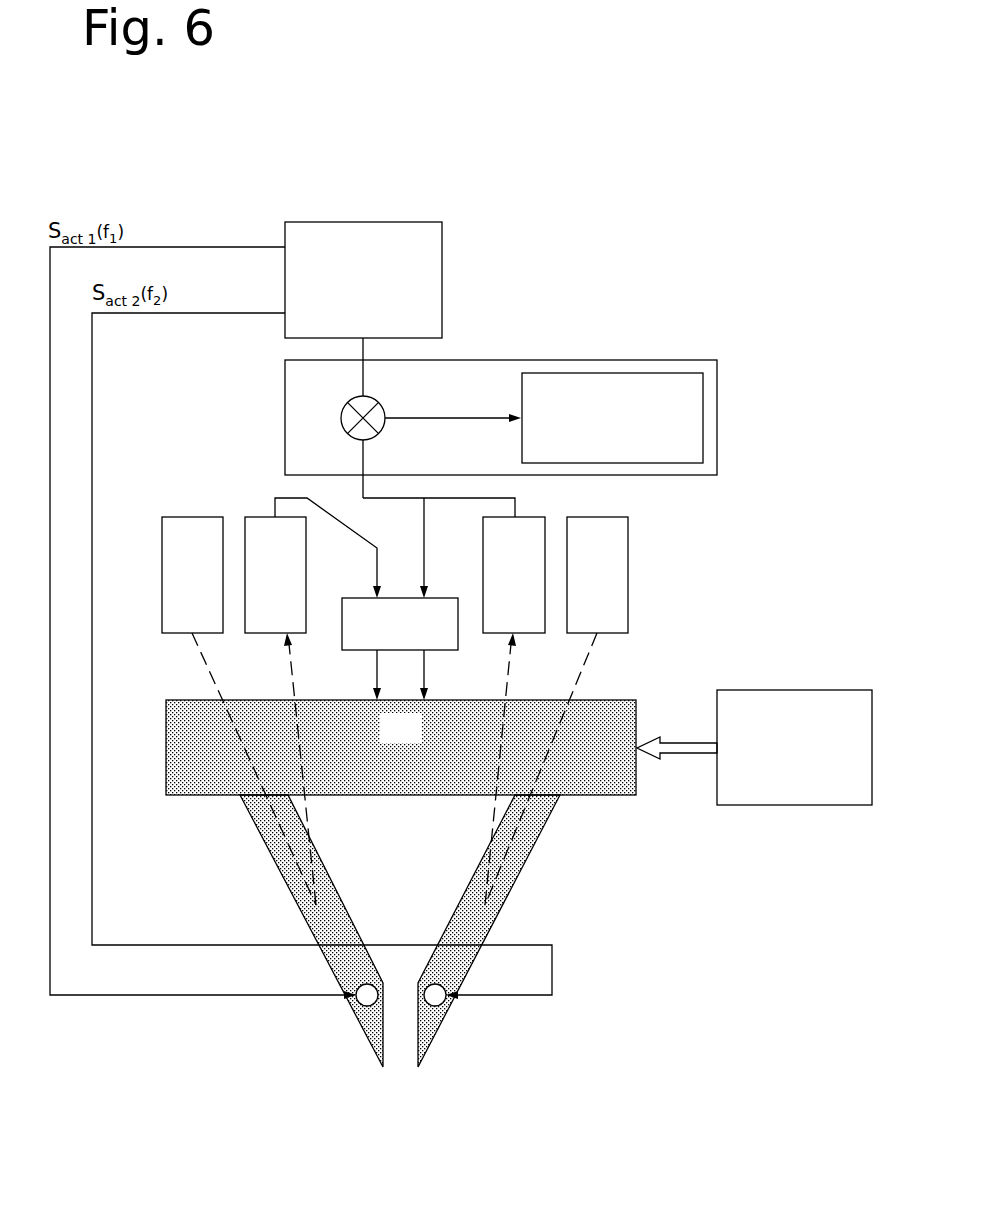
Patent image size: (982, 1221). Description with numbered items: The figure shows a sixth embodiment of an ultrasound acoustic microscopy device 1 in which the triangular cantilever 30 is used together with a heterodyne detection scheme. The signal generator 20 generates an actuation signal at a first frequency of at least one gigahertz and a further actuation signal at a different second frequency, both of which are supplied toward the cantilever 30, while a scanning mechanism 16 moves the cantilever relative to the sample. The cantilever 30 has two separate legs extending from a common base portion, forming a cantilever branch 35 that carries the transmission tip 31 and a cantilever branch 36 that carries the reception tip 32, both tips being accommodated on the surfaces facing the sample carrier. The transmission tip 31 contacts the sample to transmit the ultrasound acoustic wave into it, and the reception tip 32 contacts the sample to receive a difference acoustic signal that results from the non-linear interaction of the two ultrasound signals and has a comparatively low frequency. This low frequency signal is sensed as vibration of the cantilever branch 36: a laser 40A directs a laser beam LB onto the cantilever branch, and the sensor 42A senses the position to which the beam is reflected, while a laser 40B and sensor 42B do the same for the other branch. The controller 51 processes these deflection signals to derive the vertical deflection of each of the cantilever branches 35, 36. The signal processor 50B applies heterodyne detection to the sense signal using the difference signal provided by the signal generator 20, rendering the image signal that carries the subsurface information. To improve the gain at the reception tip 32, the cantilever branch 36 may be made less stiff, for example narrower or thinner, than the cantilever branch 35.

The ultrasound acoustic microscopy device 1 is at (652, 862).
The scanning mechanism 16 is at (754, 747).
The signal generator 20 is at (363, 280).
The cantilever 30 is at (401, 747).
The transmission tip 31 is at (365, 999).
The reception tip 32 is at (437, 999).
The cantilever branch 35 is at (272, 877).
The cantilever branch 36 is at (538, 874).
The laser 40A is at (280, 711).
The laser 40B is at (514, 711).
The sensor 42A is at (239, 711).
The sensor 42B is at (556, 711).
The signal processor 50B is at (501, 418).
The controller 51 is at (400, 624).
The laser beam LB is at (541, 652).